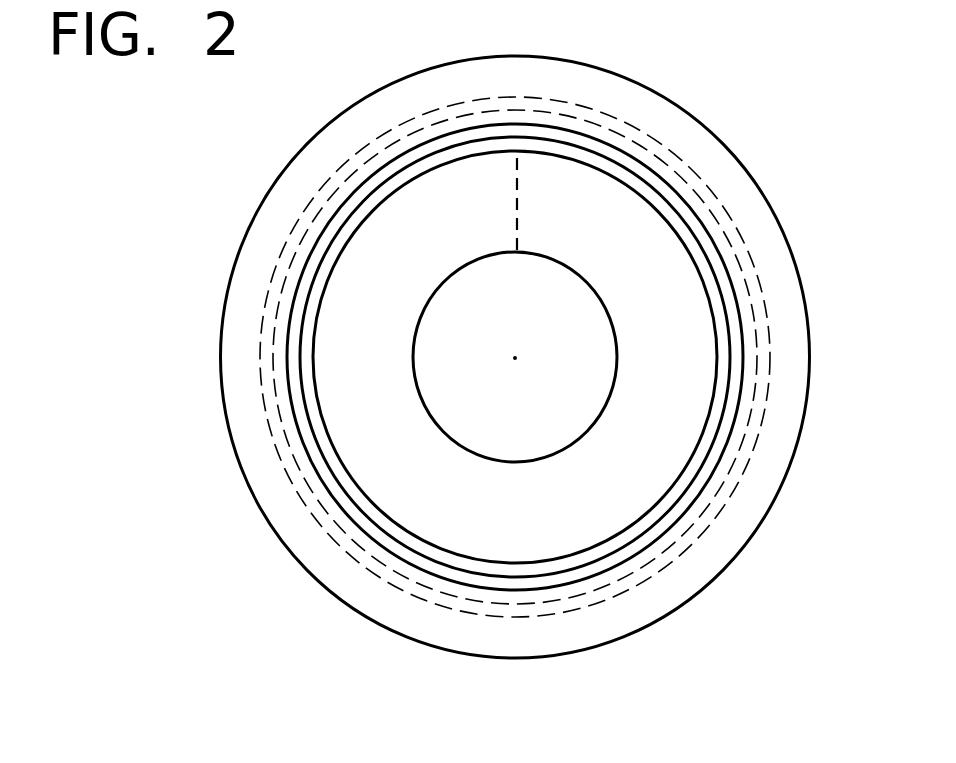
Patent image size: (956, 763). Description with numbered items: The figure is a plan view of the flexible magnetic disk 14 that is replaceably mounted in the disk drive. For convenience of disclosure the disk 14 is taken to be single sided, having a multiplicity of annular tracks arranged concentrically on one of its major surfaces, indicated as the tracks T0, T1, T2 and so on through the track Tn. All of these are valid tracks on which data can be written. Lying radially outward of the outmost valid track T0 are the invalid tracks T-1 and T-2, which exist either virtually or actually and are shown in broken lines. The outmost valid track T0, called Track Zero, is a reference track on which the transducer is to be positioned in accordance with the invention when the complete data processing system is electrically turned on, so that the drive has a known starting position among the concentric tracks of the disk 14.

The flexible magnetic disk 14 is at (735, 156).
The outmost valid track T0 is at (708, 220).
The valid track T1 is at (722, 290).
The valid track T2 is at (717, 328).
The valid track Tn is at (616, 388).
The invalid track T-1 is at (742, 449).
The invalid track T-2 is at (743, 482).